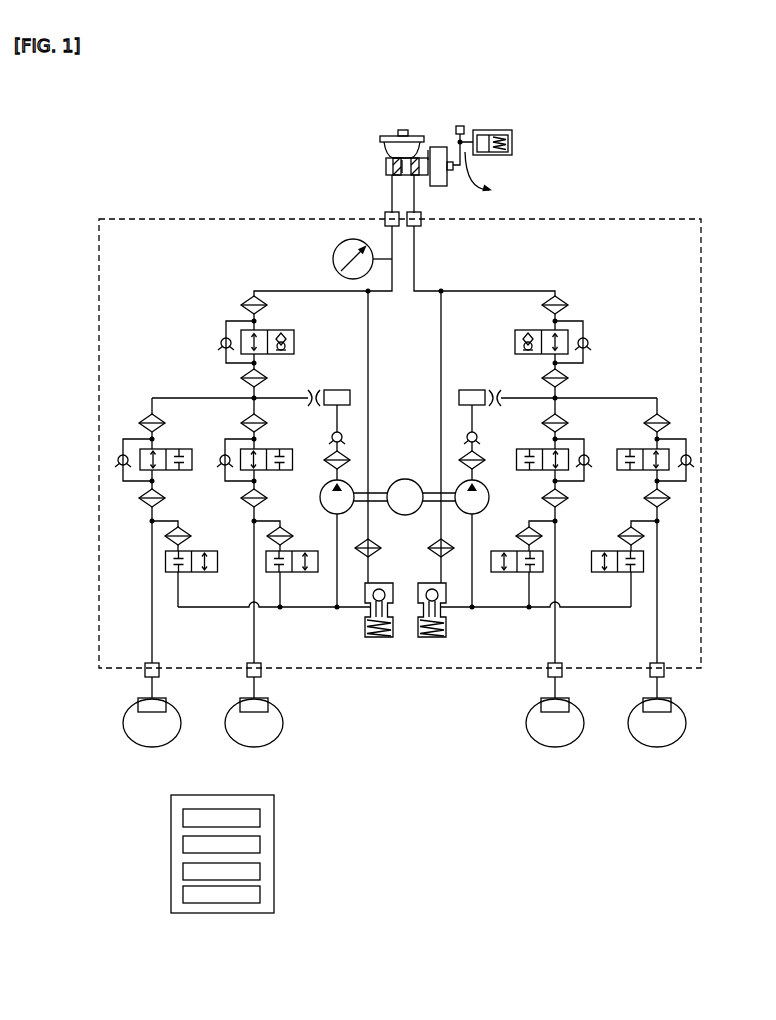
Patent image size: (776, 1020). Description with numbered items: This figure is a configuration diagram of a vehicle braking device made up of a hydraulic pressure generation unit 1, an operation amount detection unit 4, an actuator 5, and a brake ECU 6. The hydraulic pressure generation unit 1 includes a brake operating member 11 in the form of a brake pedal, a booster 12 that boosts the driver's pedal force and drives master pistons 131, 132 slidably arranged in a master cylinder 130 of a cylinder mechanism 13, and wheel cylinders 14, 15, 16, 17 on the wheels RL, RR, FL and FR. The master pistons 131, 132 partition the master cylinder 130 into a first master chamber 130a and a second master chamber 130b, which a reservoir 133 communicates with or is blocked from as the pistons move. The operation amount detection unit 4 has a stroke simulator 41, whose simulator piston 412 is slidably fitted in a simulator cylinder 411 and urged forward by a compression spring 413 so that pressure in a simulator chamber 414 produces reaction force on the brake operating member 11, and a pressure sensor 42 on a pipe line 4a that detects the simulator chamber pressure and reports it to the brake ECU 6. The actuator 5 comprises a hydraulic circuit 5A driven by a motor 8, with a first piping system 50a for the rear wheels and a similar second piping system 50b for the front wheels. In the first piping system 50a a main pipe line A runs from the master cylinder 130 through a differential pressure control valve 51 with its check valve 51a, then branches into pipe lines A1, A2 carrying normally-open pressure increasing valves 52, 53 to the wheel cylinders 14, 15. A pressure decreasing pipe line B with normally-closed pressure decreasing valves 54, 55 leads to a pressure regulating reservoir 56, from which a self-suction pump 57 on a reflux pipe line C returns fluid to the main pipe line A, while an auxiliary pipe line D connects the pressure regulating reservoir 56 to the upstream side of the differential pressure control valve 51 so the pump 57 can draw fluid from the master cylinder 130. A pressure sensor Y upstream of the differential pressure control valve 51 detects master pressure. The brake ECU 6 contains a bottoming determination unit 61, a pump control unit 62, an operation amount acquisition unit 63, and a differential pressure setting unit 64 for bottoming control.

The hydraulic pressure generation unit 1 is at (296, 105).
The operation amount detection unit 4 is at (523, 132).
The pipe line 4a is at (463, 140).
The actuator 5 is at (643, 219).
The hydraulic circuit 5A is at (561, 238).
The brake ECU 6 is at (225, 854).
The motor 8 is at (407, 478).
The brake operating member 11 is at (492, 191).
The booster 12 is at (445, 147).
The cylinder mechanism 13 is at (388, 155).
The wheel cylinder 14 is at (140, 698).
The wheel cylinder 15 is at (242, 698).
The wheel cylinder 16 is at (568, 698).
The wheel cylinder 17 is at (670, 698).
The stroke simulator 41 is at (536, 127).
The pressure sensor 42 is at (461, 125).
The first piping system 50a is at (165, 287).
The second piping system 50b is at (635, 286).
The differential pressure control valve 51 is at (283, 330).
The check valve 51a is at (219, 341).
The pressure increasing valve 52 is at (181, 449).
The pressure increasing valve 53 is at (282, 449).
The pressure decreasing valve 54 is at (207, 549).
The pressure decreasing valve 55 is at (309, 549).
The pressure regulating reservoir 56 is at (365, 634).
The pump 57 is at (322, 486).
The bottoming determination unit 61 is at (256, 816).
The pump control unit 62 is at (256, 845).
The operation amount acquisition unit 63 is at (256, 872).
The differential pressure setting unit 64 is at (256, 893).
The master cylinder 130 is at (388, 170).
The first master chamber 130a is at (417, 173).
The second master chamber 130b is at (390, 172).
The master piston 131 is at (432, 152).
The master piston 132 is at (402, 173).
The reservoir 133 is at (402, 130).
The simulator cylinder 411 is at (488, 136).
The simulator piston 412 is at (492, 133).
The compression spring 413 is at (512, 146).
The simulator chamber 414 is at (489, 173).
The main pipe line A is at (279, 286).
The pipe line A1 is at (152, 590).
The pipe line A2 is at (254, 590).
The pressure decreasing pipe line B is at (220, 609).
The reflux pipe line C is at (337, 540).
The auxiliary pipe line D is at (368, 425).
The pressure sensor Y is at (335, 253).